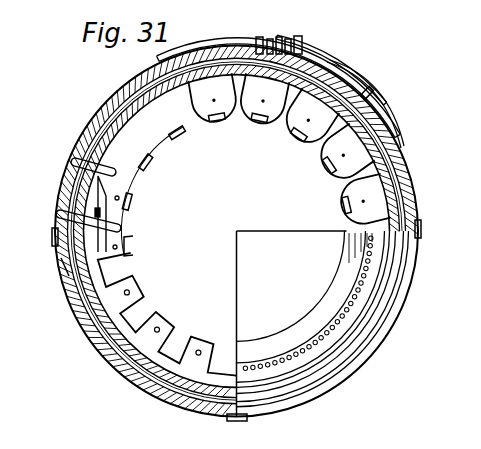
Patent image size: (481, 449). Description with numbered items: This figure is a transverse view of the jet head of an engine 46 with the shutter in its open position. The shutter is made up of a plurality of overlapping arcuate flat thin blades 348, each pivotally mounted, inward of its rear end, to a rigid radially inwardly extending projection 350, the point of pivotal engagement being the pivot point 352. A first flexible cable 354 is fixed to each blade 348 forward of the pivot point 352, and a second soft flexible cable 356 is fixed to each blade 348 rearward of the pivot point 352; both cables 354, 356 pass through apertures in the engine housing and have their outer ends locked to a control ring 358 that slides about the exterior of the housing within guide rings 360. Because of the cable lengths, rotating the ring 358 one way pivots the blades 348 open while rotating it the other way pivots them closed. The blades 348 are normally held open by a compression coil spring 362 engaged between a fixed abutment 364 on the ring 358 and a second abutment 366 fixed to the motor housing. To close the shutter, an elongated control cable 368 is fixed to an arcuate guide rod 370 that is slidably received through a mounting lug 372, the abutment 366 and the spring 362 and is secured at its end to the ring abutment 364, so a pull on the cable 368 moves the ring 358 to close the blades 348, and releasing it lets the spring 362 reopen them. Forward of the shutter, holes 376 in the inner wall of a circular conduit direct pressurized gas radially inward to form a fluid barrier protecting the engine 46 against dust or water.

The engine 46 is at (111, 368).
The shutter blades 348 is at (203, 116).
The radially inwardly extending projection 350 is at (131, 247).
The pivot point 352 is at (130, 195).
The first flexible cable 354 is at (78, 164).
The second soft flexible cable 356 is at (65, 265).
The control ring 358 is at (63, 195).
The guide rings 360 is at (54, 238).
The compression coil spring 362 is at (279, 52).
The fixed abutment 364 is at (262, 43).
The second abutment 366 is at (305, 47).
The control cable 368 is at (398, 137).
The arcuate guide rod 370 is at (348, 80).
The mounting lug 372 is at (370, 93).
The holes 376 is at (357, 292).